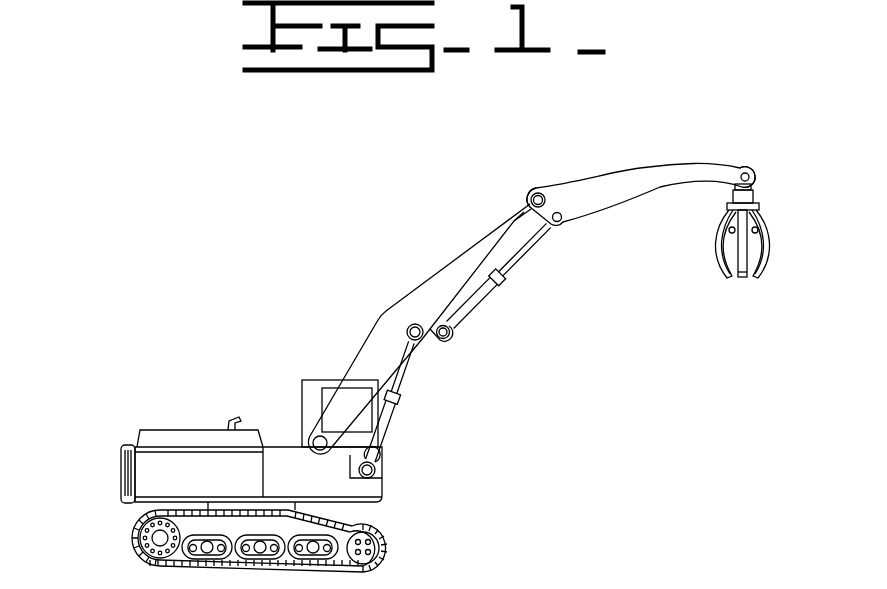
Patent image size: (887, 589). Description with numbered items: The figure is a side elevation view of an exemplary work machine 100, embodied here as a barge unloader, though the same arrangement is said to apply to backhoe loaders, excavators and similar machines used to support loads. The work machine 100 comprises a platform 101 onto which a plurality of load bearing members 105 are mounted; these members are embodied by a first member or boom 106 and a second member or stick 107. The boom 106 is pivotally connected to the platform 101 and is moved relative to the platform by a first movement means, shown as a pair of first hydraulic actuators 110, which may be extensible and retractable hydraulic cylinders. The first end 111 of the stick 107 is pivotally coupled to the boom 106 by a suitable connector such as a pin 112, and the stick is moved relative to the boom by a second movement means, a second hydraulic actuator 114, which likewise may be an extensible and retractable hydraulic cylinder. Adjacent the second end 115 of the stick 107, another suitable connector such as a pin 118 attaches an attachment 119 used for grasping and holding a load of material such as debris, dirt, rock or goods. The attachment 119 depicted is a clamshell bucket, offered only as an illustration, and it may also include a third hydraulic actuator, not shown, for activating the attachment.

The work machine 100 is at (152, 402).
The platform 101 is at (120, 502).
The load bearing members 105 is at (418, 213).
The boom 106 is at (378, 325).
The stick 107 is at (628, 172).
The first hydraulic actuators 110 is at (394, 416).
The first end of the stick 111 is at (553, 187).
The pin 112 is at (536, 196).
The second hydraulic actuator 114 is at (466, 318).
The second end of the stick 115 is at (718, 167).
The pin 118 is at (751, 177).
The attachment 119 is at (714, 251).